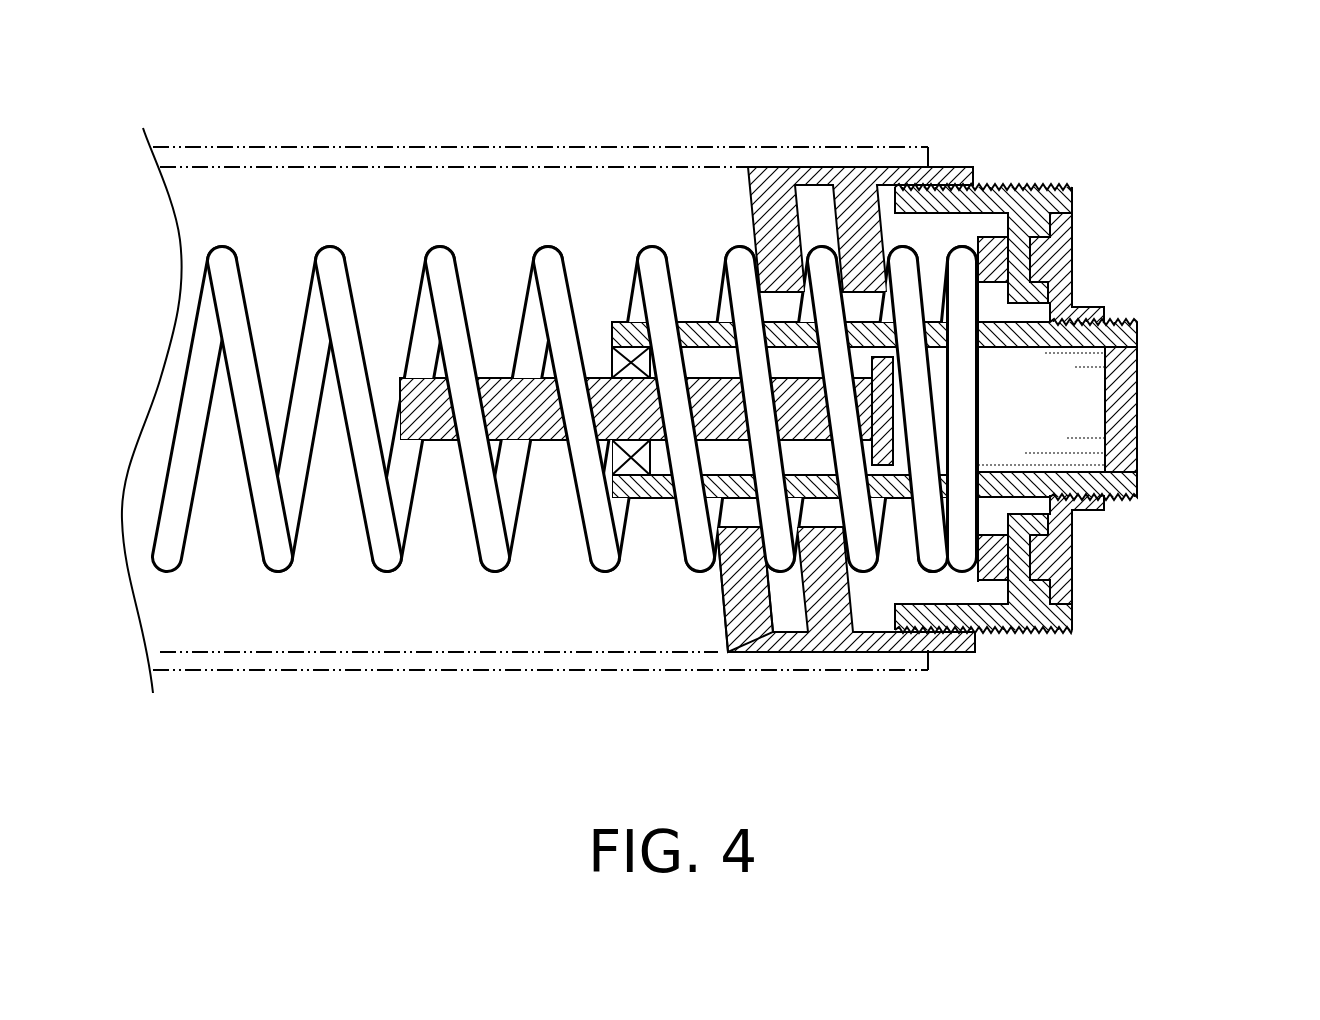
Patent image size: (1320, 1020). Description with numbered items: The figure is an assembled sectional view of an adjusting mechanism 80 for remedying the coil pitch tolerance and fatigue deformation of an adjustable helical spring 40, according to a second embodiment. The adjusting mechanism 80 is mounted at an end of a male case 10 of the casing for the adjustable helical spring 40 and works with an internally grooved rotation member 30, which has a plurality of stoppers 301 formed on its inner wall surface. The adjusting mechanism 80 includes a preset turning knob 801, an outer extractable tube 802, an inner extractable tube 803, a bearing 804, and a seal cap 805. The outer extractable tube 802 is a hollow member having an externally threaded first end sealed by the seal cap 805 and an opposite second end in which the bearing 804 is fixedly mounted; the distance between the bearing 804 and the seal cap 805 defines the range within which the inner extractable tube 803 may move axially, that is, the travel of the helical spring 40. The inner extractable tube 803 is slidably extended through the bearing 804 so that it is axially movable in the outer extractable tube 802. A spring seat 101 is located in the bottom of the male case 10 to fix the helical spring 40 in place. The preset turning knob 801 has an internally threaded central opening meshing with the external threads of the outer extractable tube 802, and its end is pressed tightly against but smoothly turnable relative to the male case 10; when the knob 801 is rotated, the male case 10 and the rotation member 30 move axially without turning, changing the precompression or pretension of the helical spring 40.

The adjusting mechanism 80 is at (1120, 150).
The adjustable helical spring 40 is at (350, 604).
The inner extractable tube 803 is at (505, 377).
The bearing 804 is at (627, 357).
The internally grooved rotation member 30 is at (893, 643).
The stoppers 301 is at (737, 608).
The male case 10 is at (1032, 630).
The spring seat 101 is at (992, 252).
The outer extractable tube 802 is at (1105, 308).
The preset turning knob 801 is at (1062, 560).
The seal cap 805 is at (1140, 397).